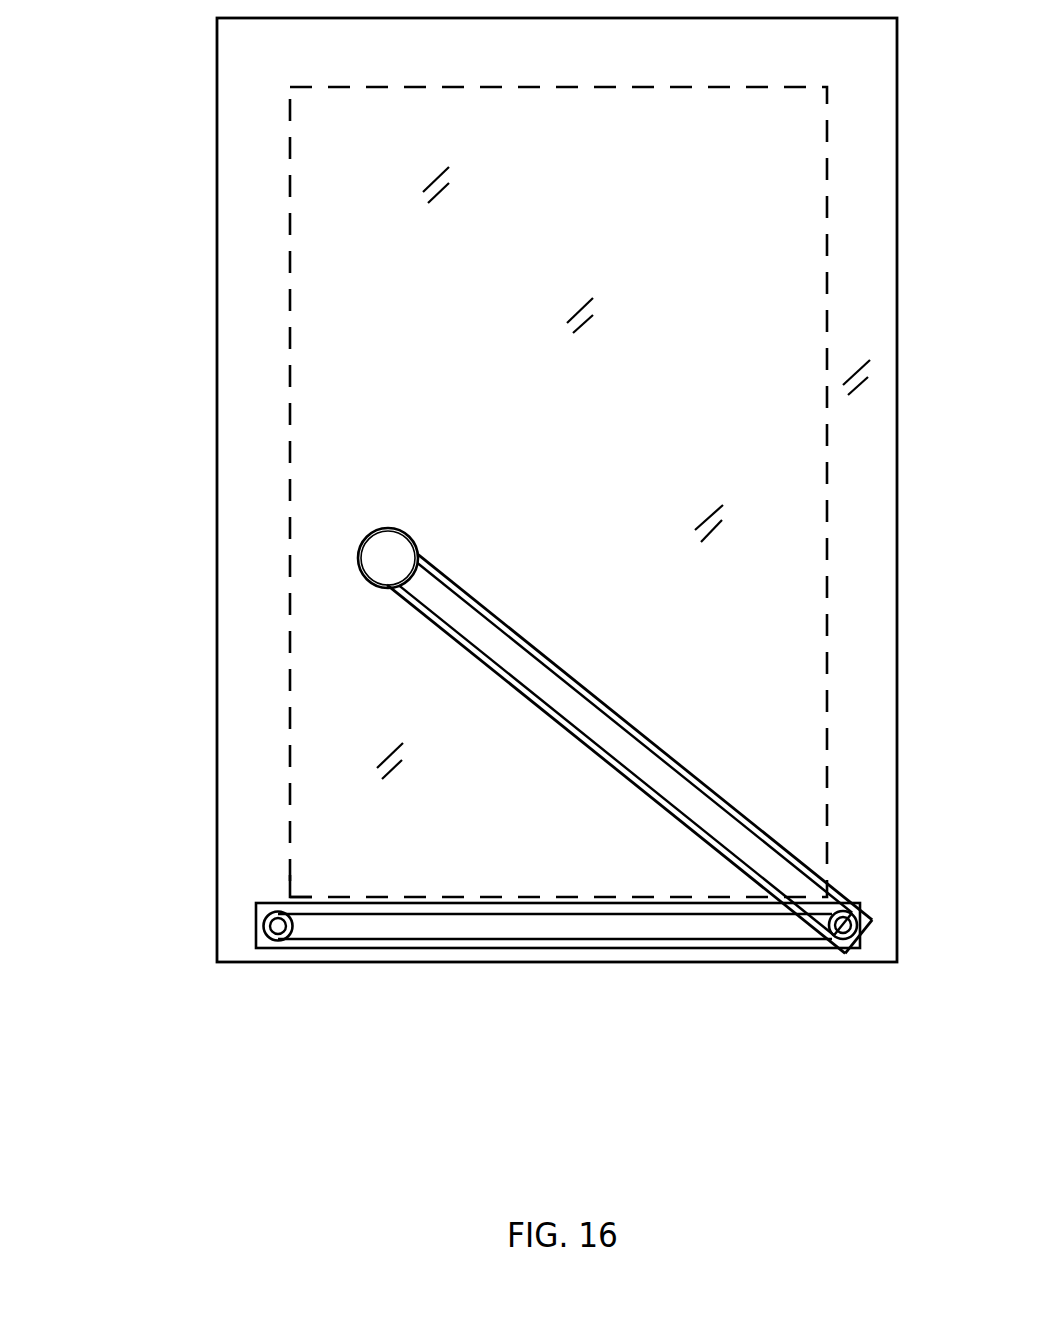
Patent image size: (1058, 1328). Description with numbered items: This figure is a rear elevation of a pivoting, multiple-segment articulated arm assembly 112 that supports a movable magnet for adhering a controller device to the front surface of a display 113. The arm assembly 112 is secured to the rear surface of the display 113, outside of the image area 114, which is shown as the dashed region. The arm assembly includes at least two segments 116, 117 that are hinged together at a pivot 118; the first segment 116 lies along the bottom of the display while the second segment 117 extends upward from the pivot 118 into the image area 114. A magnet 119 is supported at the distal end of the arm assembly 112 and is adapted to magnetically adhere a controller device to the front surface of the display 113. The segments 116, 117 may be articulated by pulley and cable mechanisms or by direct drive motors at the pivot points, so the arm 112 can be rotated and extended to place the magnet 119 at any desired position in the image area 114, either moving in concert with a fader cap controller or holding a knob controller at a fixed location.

The arm assembly 112 is at (531, 941).
The display 113 is at (217, 227).
The image area 114 is at (288, 420).
The segment 116 is at (707, 932).
The segment 117 is at (617, 710).
The pivot 118 is at (843, 930).
The magnet 119 is at (398, 550).